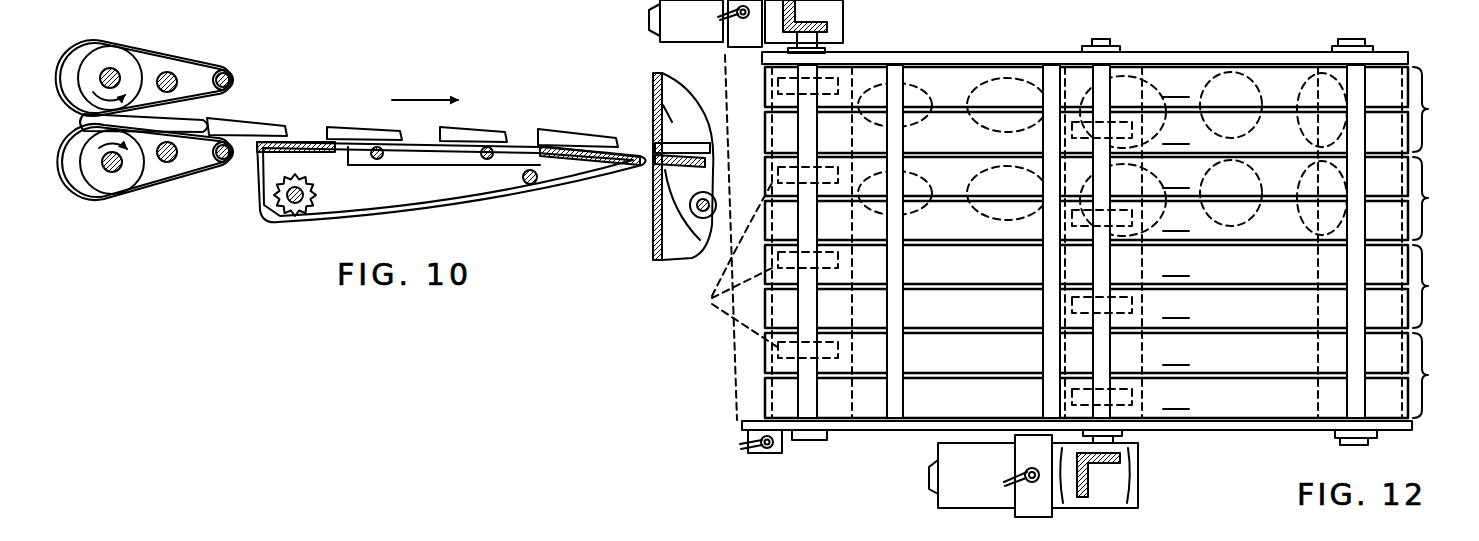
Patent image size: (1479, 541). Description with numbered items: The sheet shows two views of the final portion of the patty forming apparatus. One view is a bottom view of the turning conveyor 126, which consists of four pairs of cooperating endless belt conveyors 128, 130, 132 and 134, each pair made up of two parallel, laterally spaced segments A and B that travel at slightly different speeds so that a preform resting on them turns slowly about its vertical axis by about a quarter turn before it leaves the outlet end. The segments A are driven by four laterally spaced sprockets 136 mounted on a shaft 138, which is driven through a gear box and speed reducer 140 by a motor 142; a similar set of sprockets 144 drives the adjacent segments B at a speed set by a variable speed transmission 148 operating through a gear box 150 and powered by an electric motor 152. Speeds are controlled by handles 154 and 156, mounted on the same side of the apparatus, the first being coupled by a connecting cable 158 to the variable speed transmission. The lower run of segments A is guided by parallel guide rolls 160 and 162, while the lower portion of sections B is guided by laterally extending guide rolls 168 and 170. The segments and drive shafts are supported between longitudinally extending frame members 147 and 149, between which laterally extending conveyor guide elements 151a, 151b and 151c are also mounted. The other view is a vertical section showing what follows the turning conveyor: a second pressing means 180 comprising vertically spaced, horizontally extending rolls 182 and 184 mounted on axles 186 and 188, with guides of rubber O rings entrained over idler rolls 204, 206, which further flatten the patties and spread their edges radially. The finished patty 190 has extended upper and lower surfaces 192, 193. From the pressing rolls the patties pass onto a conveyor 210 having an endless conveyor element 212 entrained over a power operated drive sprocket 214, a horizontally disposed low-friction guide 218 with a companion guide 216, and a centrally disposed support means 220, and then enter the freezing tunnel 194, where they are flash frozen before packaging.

In FIG. 10, the second pressing means 180 is at (145, 40).
In FIG. 10, the upper pressing roll 182 is at (118, 52).
In FIG. 10, the lower pressing roll 184 is at (96, 173).
In FIG. 10, the axle 186 is at (121, 70).
In FIG. 10, the axle 188 is at (119, 172).
In FIG. 10, the finished patty 190 is at (356, 132).
In FIG. 10, the upper surface of patty 192 is at (254, 116).
In FIG. 10, the lower surface of patty 193 is at (468, 136).
In FIG. 10, the freezing tunnel 194 is at (668, 108).
In FIG. 10, the idler roll 204 is at (220, 70).
In FIG. 10, the idler roll 206 is at (226, 163).
In FIG. 10, the conveyor 210 is at (367, 112).
In FIG. 10, the endless conveyor element 212 is at (405, 208).
In FIG. 10, the power operated drive sprocket 214 is at (292, 212).
In FIG. 10, the tray liner 216 is at (322, 155).
In FIG. 10, the guide 218 is at (572, 163).
In FIG. 10, the centrally disposed support means 220 is at (485, 160).
In FIG. 12, the conveyor 126 is at (975, 43).
In FIG. 12, the endless belt conveyor pair 128 is at (1444, 109).
In FIG. 12, the endless belt conveyor pair 130 is at (1444, 198).
In FIG. 12, the endless belt conveyor pair 132 is at (1444, 286).
In FIG. 12, the endless belt conveyor pair 134 is at (1444, 375).
In FIG. 12, the sprockets 136 is at (753, 218).
In FIG. 12, the shaft 138 is at (810, 393).
In FIG. 12, the gear box and speed reducer 140 is at (747, 38).
In FIG. 12, the motor 142 is at (712, 14).
In FIG. 12, the sprockets 144 is at (1067, 305).
In FIG. 12, the frame member 147 is at (1040, 55).
In FIG. 12, the variable speed transmission 148 is at (1027, 503).
In FIG. 12, the frame member 149 is at (1223, 428).
In FIG. 12, the gear box 150 is at (1130, 484).
In FIG. 12, the conveyor guide element 151a is at (853, 261).
In FIG. 12, the conveyor guide element 151b is at (1073, 347).
In FIG. 12, the conveyor guide element 151c is at (1320, 352).
In FIG. 12, the electric motor 152 is at (950, 479).
In FIG. 12, the handle 154 is at (745, 447).
In FIG. 12, the handle 156 is at (1012, 487).
In FIG. 12, the connecting cable 158 is at (735, 357).
In FIG. 12, the guide roll 160 is at (1045, 335).
In FIG. 12, the guide roll 162 is at (1327, 58).
In FIG. 12, the guide roll 168 is at (897, 395).
In FIG. 12, the guide roll 170 is at (1357, 78).